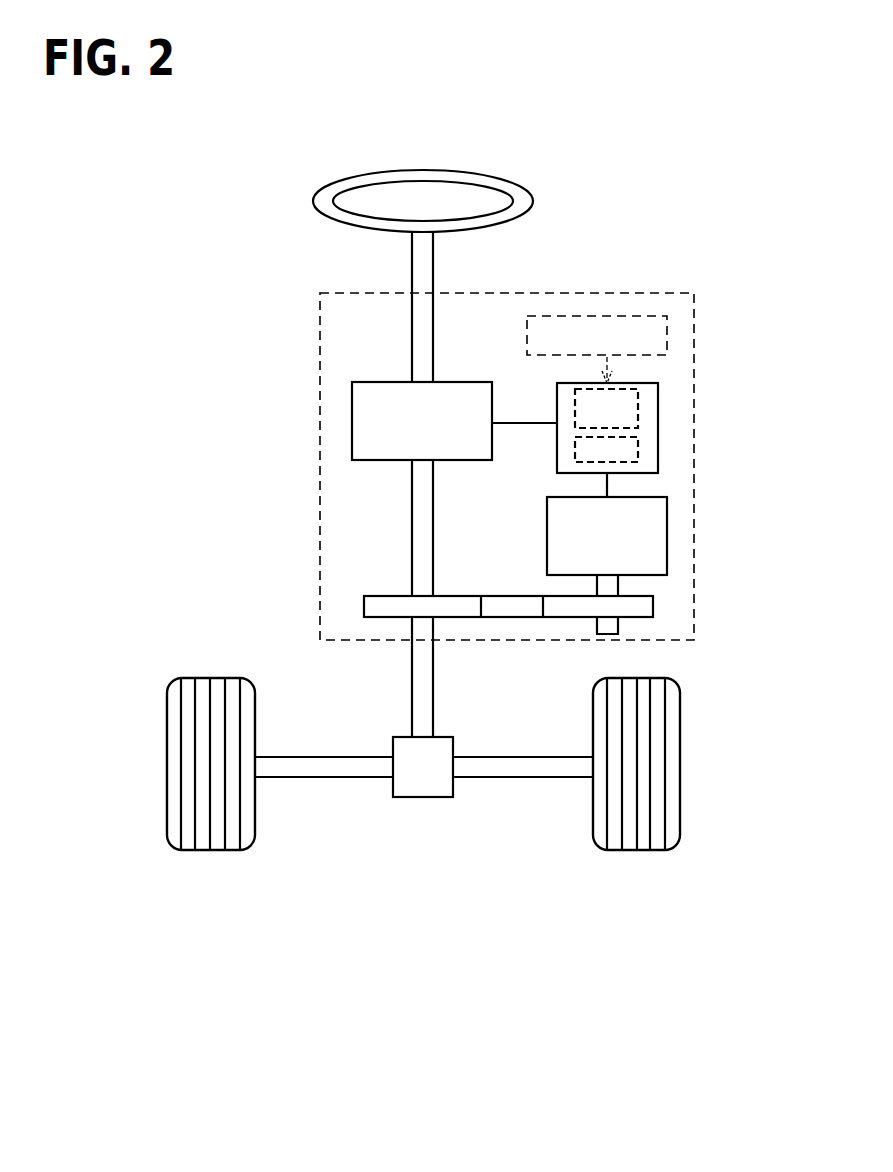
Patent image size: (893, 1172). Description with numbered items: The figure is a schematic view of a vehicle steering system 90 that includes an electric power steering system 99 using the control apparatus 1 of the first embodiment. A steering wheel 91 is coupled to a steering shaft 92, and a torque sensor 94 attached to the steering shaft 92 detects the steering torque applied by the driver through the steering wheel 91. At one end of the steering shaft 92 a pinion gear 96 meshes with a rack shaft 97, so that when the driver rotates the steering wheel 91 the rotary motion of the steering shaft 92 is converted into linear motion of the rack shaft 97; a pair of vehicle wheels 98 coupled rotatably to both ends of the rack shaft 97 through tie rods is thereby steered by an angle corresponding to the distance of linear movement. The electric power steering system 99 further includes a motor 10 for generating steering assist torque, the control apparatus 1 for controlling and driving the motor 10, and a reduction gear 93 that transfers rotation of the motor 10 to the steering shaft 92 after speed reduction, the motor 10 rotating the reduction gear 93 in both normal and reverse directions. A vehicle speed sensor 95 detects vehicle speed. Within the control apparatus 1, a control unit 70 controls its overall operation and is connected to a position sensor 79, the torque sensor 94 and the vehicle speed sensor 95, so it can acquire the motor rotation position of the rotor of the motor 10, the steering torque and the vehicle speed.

The control apparatus 1 is at (658, 384).
The motor 10 is at (667, 525).
The control unit 70 is at (638, 410).
The position sensor 79 is at (638, 446).
The steering system 90 is at (377, 890).
The steering wheel 91 is at (313, 203).
The steering shaft 92 is at (412, 269).
The reduction gear 93 is at (653, 606).
The torque sensor 94 is at (352, 433).
The vehicle speed sensor 95 is at (667, 338).
The pinion gear 96 is at (416, 797).
The rack shaft 97 is at (317, 777).
The vehicle wheels 98 is at (227, 850).
The electric power steering system 99 is at (616, 293).